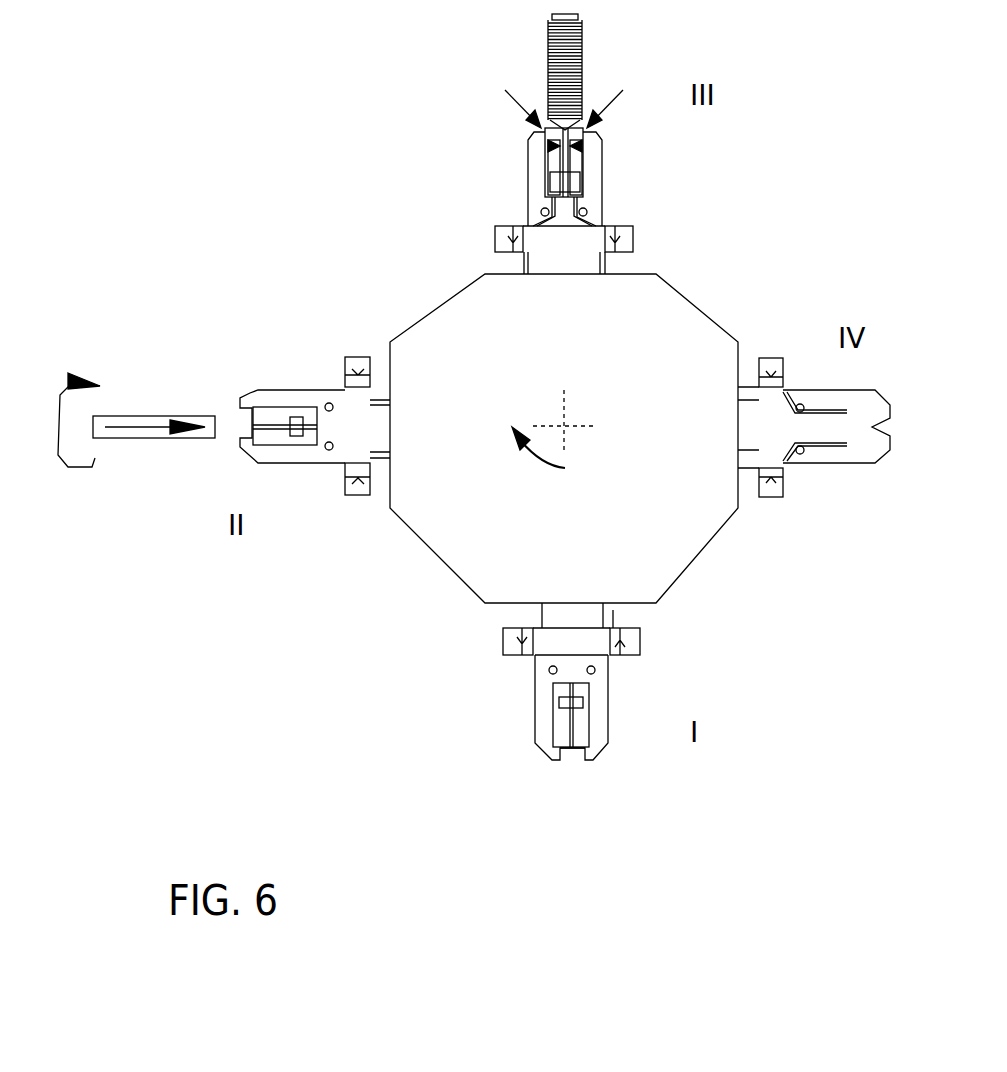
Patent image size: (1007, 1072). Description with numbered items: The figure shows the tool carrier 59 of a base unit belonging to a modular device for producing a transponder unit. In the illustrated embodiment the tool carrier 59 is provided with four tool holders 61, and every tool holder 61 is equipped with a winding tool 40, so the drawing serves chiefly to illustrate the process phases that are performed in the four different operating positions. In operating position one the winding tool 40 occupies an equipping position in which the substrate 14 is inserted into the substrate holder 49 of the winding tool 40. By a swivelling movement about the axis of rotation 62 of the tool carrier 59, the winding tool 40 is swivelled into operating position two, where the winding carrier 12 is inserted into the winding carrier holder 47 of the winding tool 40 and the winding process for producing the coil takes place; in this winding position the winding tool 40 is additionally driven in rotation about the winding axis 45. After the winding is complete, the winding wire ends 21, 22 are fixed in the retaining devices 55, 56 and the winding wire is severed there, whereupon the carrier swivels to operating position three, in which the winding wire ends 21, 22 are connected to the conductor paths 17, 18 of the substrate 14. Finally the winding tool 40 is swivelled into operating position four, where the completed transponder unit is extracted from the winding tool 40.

The winding carrier 12 is at (155, 440).
The substrate 14 is at (560, 727).
The conductor path 17 is at (552, 164).
The conductor path 18 is at (572, 160).
The winding wire end 21 is at (550, 172).
The winding wire end 22 is at (575, 176).
The winding tool 40 is at (522, 684).
The winding axis 45 is at (79, 406).
The winding carrier holder 47 is at (238, 415).
The substrate holder 49 is at (573, 766).
The retaining device 55 is at (341, 366).
The retaining device 56 is at (337, 478).
The tool carrier 59 is at (620, 471).
The tool holder 61 is at (752, 338).
The axis of rotation 62 is at (584, 425).